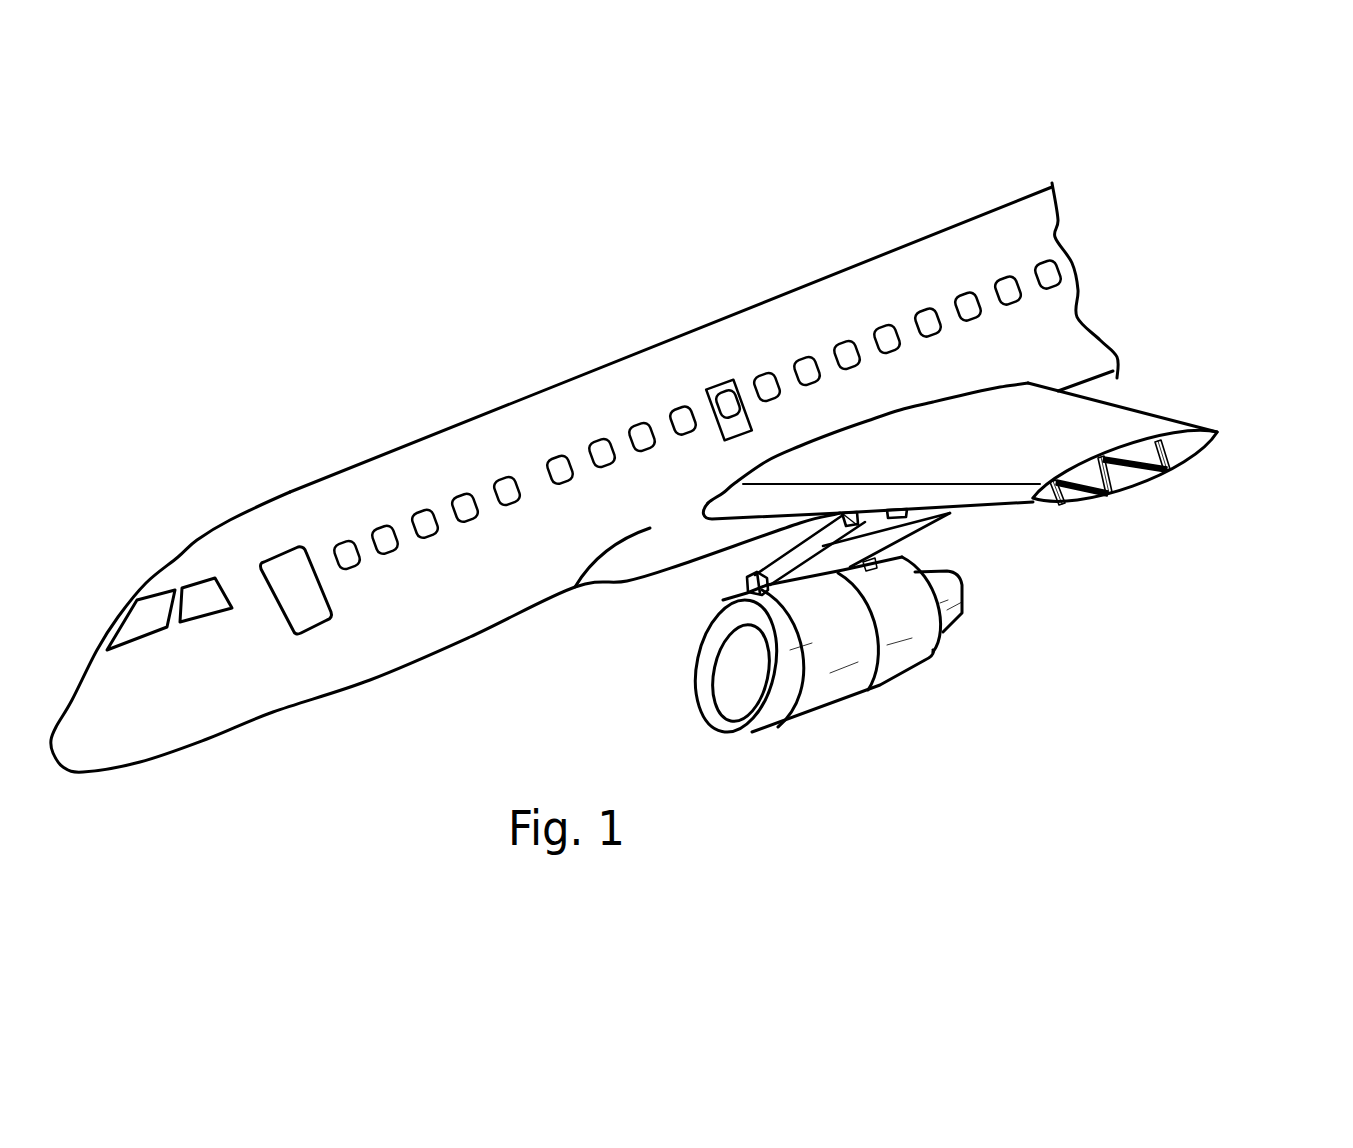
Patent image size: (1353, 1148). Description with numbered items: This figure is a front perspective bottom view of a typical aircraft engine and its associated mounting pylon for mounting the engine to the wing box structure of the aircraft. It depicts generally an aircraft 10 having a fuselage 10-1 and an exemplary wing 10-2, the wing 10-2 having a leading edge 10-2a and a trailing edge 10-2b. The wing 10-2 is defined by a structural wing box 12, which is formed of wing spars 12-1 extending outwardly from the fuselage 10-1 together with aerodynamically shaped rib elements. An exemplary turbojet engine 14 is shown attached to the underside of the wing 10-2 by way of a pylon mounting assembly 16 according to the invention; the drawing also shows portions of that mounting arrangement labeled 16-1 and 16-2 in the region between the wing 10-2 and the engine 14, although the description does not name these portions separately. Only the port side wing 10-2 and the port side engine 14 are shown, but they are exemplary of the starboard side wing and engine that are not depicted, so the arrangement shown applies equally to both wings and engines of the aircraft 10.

The aircraft 10 is at (660, 243).
The fuselage 10-1 is at (912, 308).
The wing 10-2 is at (1013, 453).
The leading edge 10-2a is at (1030, 505).
The trailing edge 10-2b is at (1187, 418).
The structural wing box 12 is at (1136, 444).
The wing spars 12-1 is at (1118, 473).
The turbojet engine 14 is at (845, 641).
The pylon mounting assembly 16 is at (810, 531).
The pylon wing attachment 16-1 is at (862, 517).
The pylon lower member 16-2 is at (923, 522).